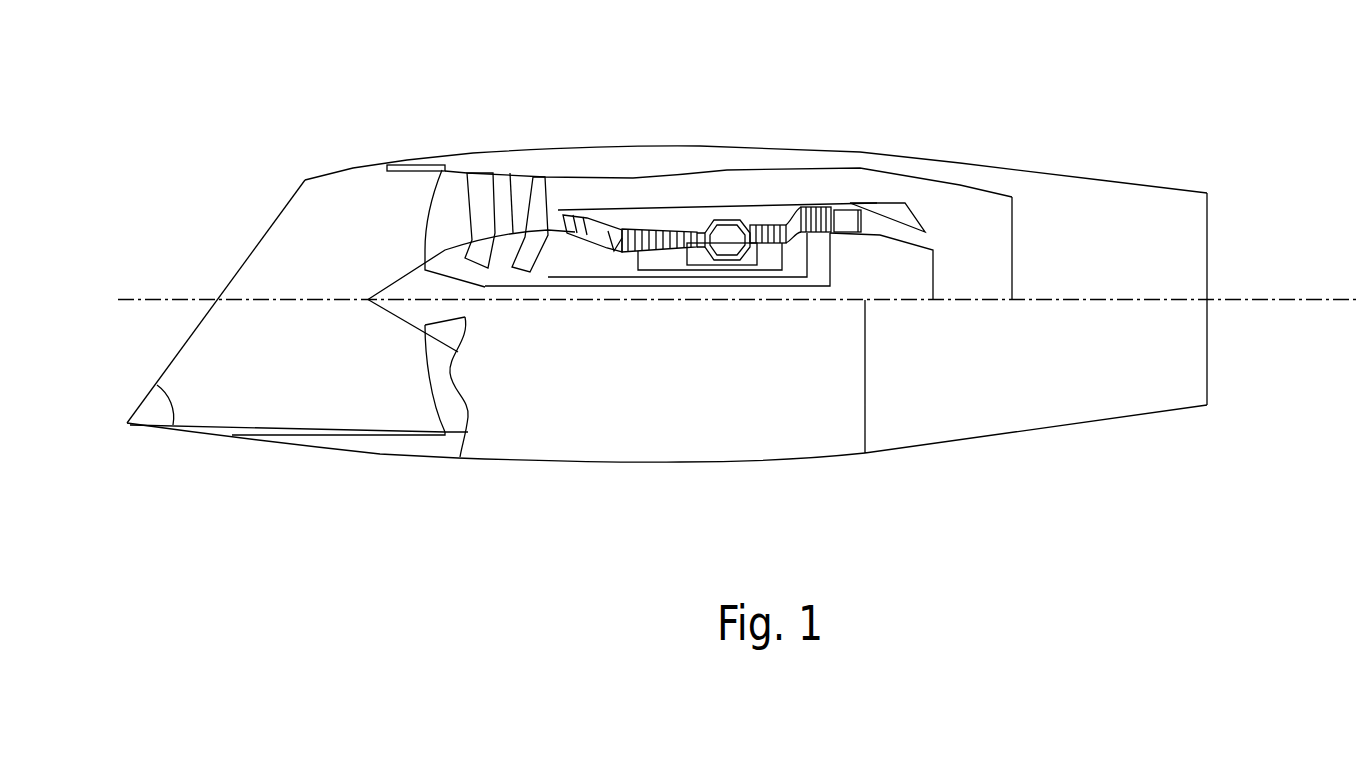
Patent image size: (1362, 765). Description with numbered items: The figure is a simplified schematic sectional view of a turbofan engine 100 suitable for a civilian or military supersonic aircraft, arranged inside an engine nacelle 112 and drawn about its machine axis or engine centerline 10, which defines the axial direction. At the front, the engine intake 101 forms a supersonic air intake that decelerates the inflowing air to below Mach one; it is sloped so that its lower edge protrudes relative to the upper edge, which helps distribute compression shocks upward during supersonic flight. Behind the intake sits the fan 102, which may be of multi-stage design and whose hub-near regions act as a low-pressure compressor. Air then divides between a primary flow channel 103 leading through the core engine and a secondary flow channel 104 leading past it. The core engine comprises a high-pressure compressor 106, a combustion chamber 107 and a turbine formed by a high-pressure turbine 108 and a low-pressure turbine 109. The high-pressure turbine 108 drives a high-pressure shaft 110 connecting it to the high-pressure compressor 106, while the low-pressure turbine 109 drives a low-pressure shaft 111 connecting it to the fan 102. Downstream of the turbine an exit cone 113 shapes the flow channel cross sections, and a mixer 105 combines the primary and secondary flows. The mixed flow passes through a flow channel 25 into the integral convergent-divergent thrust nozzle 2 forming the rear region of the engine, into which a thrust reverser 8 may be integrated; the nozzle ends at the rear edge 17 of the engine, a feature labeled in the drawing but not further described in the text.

The turbofan engine 100 is at (582, 115).
The convergent-divergent thrust nozzle 2 is at (1100, 178).
The thrust reverser 8 is at (943, 452).
The engine centerline 10 is at (267, 300).
The nacelle trailing edge 17 is at (1208, 262).
The flow channel 25 is at (980, 205).
The engine intake 101 is at (347, 178).
The fan 102 is at (488, 163).
The primary flow channel 103 is at (620, 245).
The secondary flow channel 104 is at (665, 188).
The mixer 105 is at (902, 205).
The high-pressure compressor 106 is at (663, 257).
The combustion chamber 107 is at (725, 208).
The high-pressure turbine 108 is at (797, 250).
The low-pressure turbine 109 is at (820, 240).
The high-pressure shaft 110 is at (692, 266).
The low-pressure shaft 111 is at (582, 278).
The engine nacelle 112 is at (580, 462).
The exit cone 113 is at (933, 249).